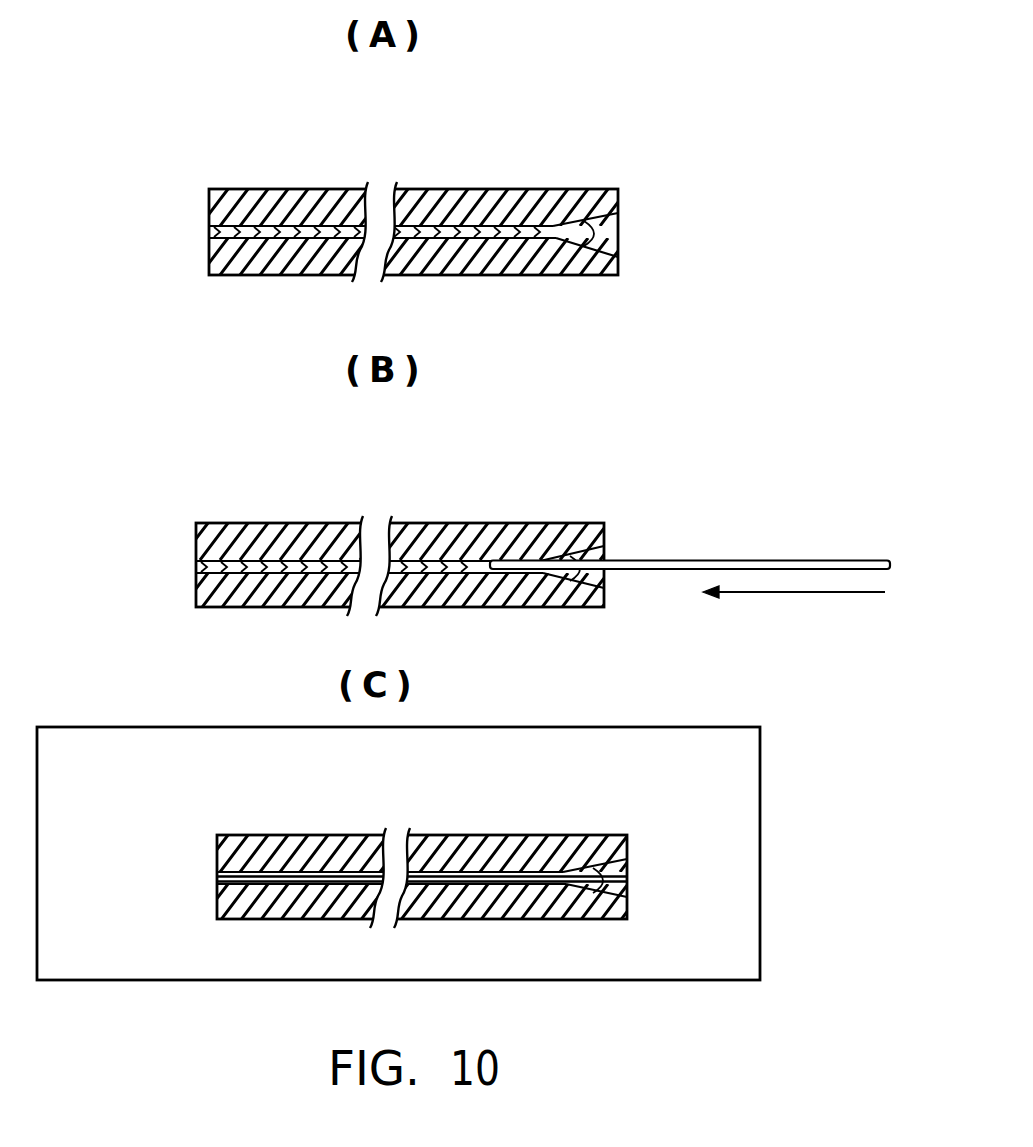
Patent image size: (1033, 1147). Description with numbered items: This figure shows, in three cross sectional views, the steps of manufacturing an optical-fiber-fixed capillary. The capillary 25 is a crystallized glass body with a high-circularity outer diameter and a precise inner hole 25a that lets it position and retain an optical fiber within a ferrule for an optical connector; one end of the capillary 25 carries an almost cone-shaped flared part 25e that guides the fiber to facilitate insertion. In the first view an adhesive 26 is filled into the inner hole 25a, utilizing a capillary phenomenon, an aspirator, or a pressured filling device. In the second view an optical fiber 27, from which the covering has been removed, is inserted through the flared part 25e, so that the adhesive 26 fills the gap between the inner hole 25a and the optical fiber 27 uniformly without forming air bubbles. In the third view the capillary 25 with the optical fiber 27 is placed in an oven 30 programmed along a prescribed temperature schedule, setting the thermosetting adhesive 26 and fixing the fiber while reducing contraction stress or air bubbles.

The capillary 25 is at (463, 172).
The inner hole 25a is at (208, 228).
The flared part 25e is at (618, 213).
The adhesive 26 is at (606, 242).
The optical fiber 27 is at (752, 562).
The oven 30 is at (758, 937).